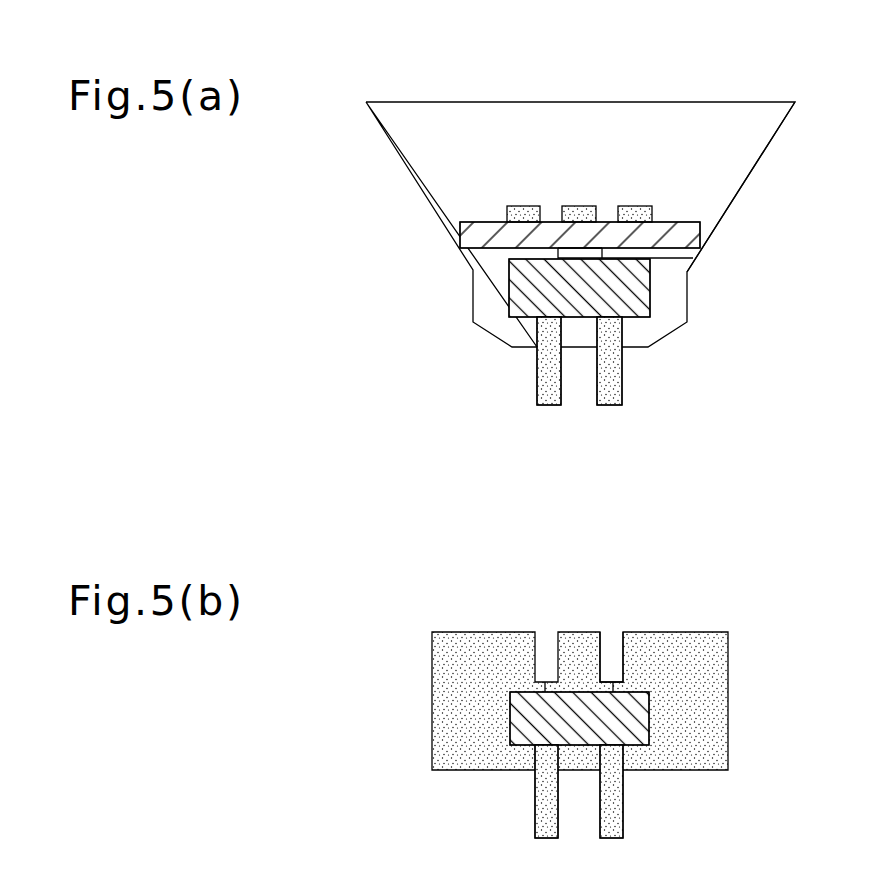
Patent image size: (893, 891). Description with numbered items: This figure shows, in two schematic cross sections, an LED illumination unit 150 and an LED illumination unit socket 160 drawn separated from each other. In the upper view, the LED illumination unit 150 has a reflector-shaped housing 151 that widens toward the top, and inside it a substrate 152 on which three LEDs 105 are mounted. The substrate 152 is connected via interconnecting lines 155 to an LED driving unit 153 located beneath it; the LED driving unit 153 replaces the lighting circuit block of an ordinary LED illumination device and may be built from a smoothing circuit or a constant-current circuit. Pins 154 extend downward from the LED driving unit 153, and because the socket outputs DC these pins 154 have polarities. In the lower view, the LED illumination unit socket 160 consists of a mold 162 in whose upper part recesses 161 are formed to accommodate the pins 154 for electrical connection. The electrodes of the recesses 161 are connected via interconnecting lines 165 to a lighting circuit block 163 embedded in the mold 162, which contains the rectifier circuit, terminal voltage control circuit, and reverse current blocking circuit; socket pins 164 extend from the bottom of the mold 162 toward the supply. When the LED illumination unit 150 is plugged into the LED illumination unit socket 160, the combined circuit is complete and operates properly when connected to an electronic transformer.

In FIG. 5A, the LED illumination unit 150 is at (346, 101).
In FIG. 5A, the reflector housing 151 is at (775, 100).
In FIG. 5A, the substrate 152 is at (700, 224).
In FIG. 5A, the LEDs 105 is at (633, 206).
In FIG. 5A, the LED driving unit 153 is at (650, 286).
In FIG. 5A, the pins 154 is at (622, 385).
In FIG. 5A, the interconnecting lines 155 is at (558, 251).
In FIG. 5B, the LED illumination unit socket 160 is at (560, 663).
In FIG. 5B, the recesses 161 is at (614, 647).
In FIG. 5B, the mold 162 is at (697, 665).
In FIG. 5B, the lighting circuit block 163 is at (650, 724).
In FIG. 5B, the lead pins 164 is at (625, 802).
In FIG. 5B, the interconnecting lines 165 is at (545, 690).